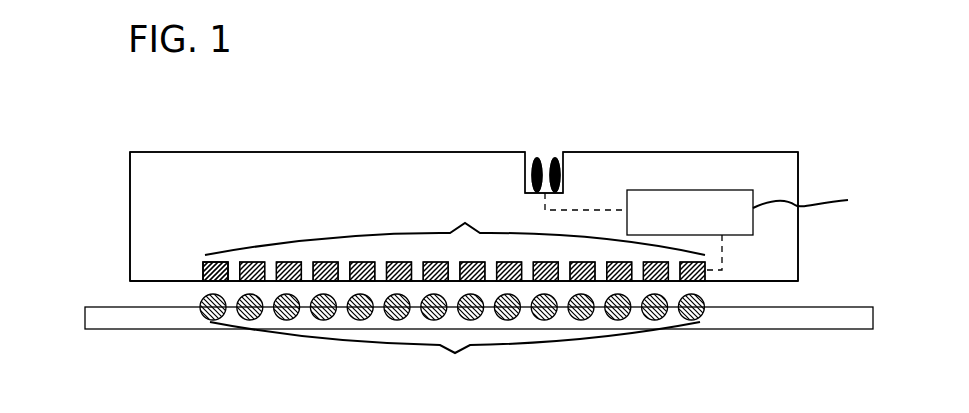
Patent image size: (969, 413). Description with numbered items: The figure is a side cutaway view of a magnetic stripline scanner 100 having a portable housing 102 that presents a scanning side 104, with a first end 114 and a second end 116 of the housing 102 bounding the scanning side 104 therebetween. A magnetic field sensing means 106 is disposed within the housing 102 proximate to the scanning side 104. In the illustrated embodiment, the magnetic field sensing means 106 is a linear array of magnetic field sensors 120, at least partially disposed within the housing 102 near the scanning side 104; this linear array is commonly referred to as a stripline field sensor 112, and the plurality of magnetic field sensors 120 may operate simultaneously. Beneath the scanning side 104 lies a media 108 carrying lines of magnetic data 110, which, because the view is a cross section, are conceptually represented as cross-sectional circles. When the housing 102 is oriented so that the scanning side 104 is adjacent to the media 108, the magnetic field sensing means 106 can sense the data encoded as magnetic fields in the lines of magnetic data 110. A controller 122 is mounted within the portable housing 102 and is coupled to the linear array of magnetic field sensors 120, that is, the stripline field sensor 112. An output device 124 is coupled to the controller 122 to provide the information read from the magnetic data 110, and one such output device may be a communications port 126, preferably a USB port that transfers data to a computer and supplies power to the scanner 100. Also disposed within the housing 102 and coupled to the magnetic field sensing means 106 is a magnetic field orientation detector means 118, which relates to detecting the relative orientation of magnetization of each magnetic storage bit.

The magnetic stripline scanner 100 is at (802, 133).
The portable housing 102 is at (158, 152).
The scanning side 104 is at (750, 288).
The magnetic field sensing means 106 is at (463, 223).
The media 108 is at (852, 318).
The lines of magnetic data 110 is at (452, 342).
The stripline field sensor 112 is at (454, 271).
The first end 114 is at (120, 280).
The second end 116 is at (806, 278).
The magnetic field orientation detector means 118 is at (578, 237).
The magnetic field sensors 120 is at (200, 282).
The controller 122 is at (820, 201).
The output device 124 is at (553, 158).
The communications port 126 is at (546, 175).